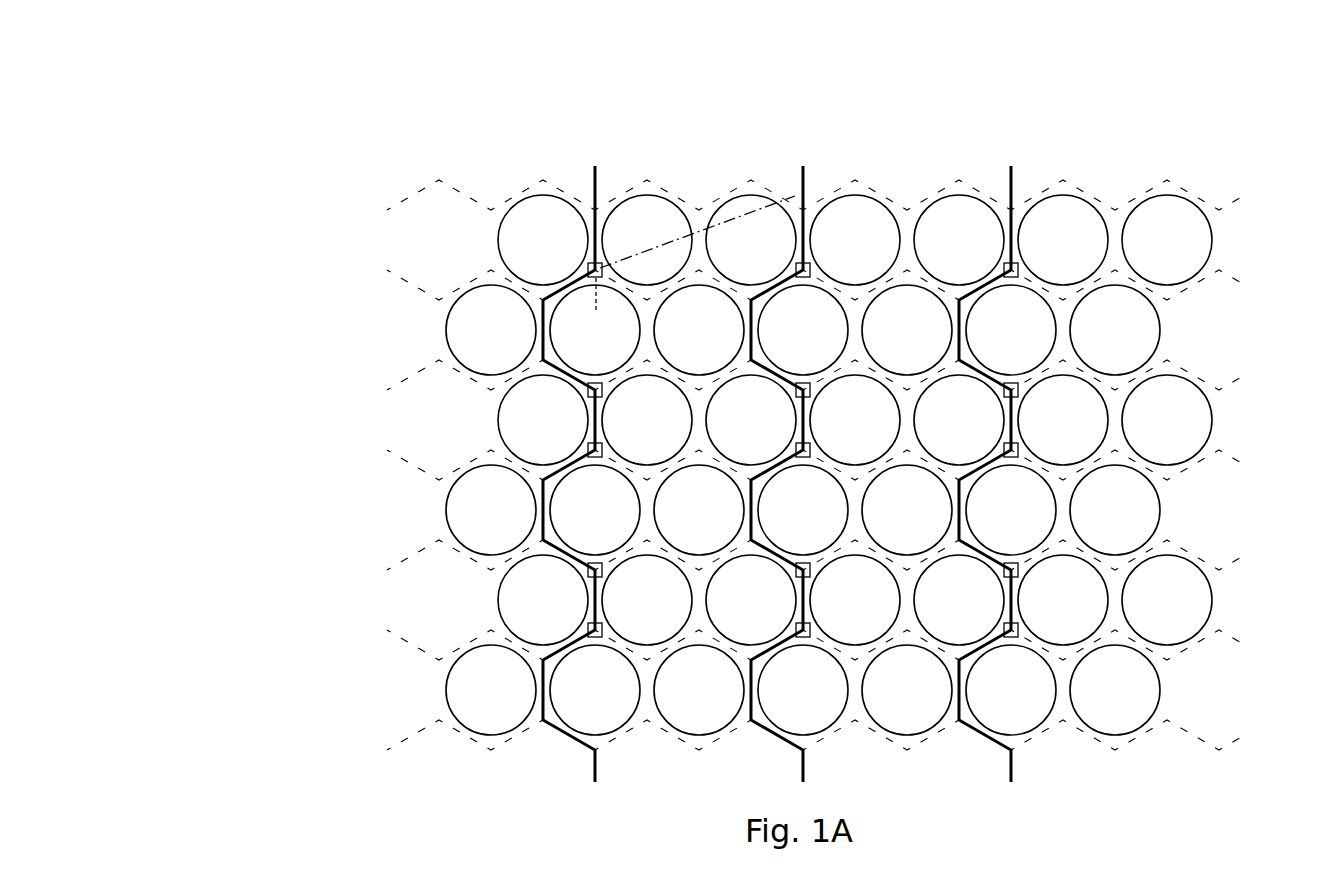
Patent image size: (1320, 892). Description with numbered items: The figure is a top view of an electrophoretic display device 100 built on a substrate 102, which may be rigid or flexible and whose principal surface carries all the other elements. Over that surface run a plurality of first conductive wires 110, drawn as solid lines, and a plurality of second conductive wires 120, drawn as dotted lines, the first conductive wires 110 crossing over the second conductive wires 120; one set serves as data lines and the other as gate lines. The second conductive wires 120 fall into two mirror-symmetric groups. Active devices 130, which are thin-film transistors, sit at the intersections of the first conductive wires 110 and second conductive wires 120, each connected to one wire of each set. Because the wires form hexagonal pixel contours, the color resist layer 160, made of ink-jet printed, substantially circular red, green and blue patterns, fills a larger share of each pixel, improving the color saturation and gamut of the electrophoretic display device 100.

The electrophoretic display device 100 is at (362, 70).
The substrate 102 is at (866, 79).
The first conductive wires 110 is at (597, 166).
The second conductive wires 120 is at (420, 191).
The active devices 130 is at (588, 258).
The color resist layer 160 is at (650, 193).